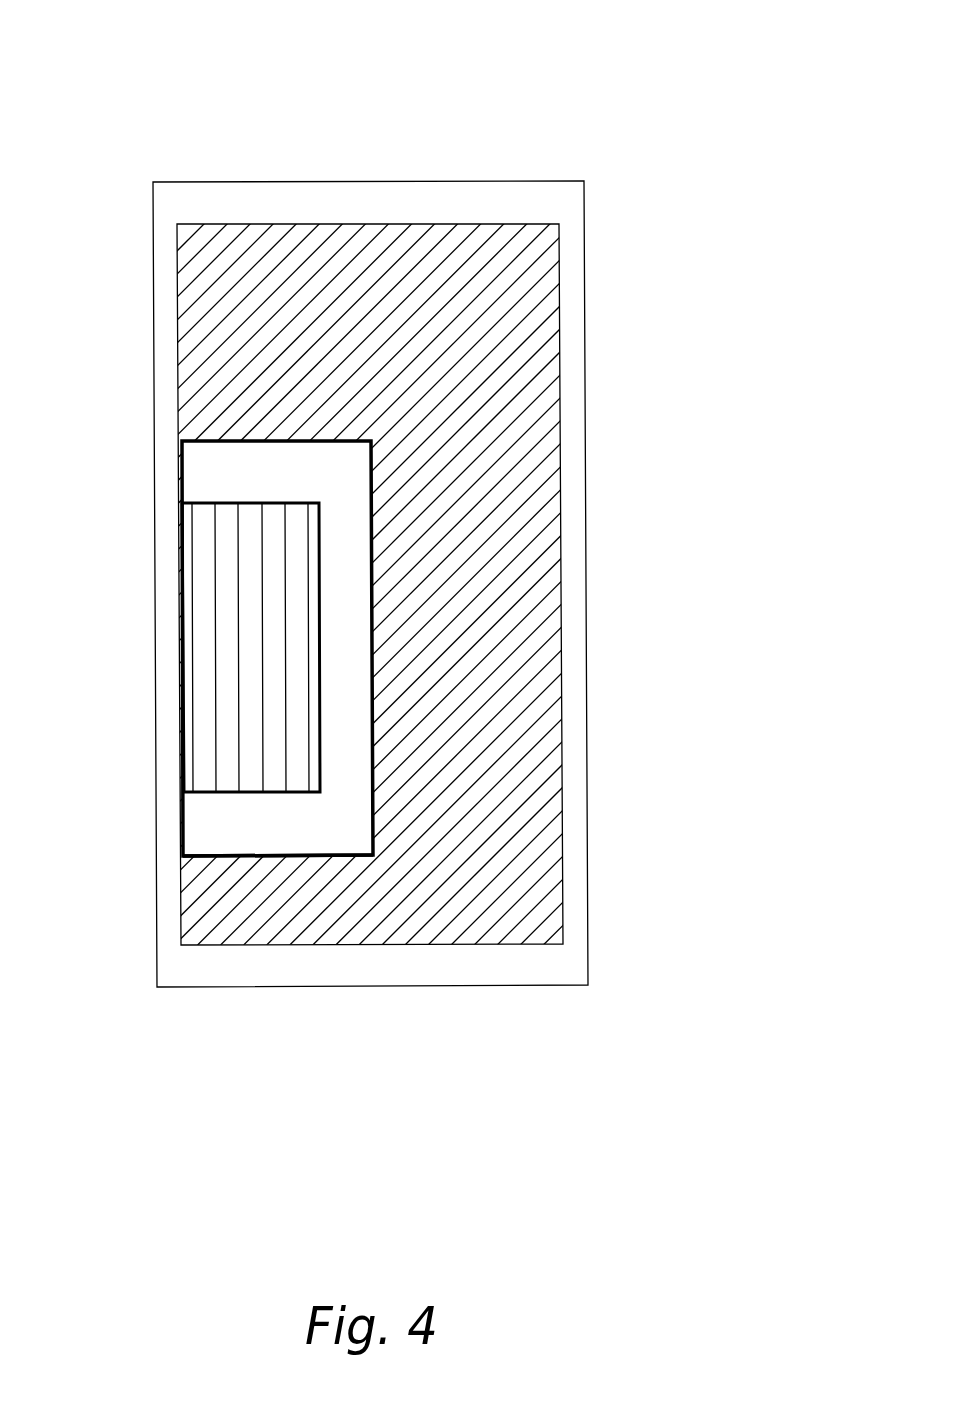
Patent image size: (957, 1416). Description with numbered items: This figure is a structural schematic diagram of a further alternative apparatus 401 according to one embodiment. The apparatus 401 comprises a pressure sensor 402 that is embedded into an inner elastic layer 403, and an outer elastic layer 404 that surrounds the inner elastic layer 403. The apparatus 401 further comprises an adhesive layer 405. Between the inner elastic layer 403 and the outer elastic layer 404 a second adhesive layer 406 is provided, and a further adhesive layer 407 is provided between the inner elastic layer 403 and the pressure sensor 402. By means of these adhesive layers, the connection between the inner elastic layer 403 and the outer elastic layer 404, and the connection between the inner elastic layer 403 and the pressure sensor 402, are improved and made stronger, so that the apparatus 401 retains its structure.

The apparatus 401 is at (661, 117).
The pressure sensor 402 is at (253, 648).
The inner elastic layer 403 is at (201, 504).
The outer elastic layer 404 is at (508, 329).
The adhesive layer 405 is at (367, 181).
The second adhesive layer 406 is at (223, 439).
The adhesive layer 407 is at (200, 826).